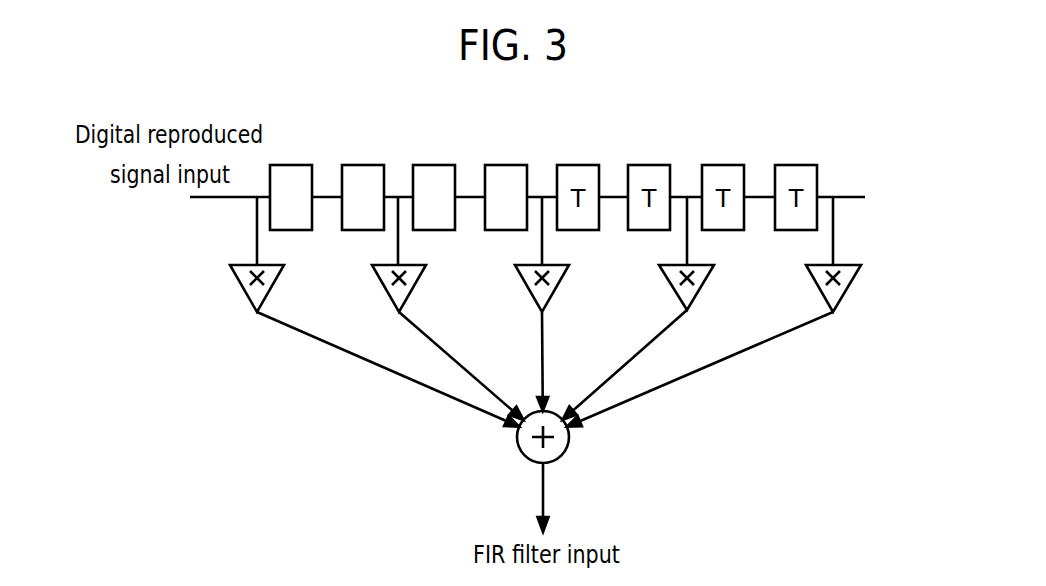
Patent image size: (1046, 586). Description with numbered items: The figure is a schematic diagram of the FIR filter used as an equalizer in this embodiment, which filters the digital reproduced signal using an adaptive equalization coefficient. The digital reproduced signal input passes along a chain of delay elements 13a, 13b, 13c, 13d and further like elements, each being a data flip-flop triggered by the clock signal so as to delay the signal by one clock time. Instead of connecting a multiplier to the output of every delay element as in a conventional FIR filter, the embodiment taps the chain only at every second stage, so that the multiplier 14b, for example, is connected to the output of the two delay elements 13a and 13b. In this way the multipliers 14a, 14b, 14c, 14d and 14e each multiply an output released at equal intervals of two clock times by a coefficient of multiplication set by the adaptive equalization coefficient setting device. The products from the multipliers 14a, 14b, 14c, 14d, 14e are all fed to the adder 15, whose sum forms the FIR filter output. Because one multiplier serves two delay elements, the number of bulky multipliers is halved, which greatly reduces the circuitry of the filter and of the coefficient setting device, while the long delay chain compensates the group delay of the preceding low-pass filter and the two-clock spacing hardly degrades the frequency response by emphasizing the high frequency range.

The delay element 13a is at (297, 165).
The delay element 13b is at (362, 165).
The delay element 13c is at (432, 165).
The delay element 13d is at (504, 165).
The multiplier 14a is at (242, 287).
The multiplier 14b is at (381, 285).
The multiplier 14c is at (525, 285).
The multiplier 14d is at (672, 283).
The multiplier 14e is at (848, 285).
The adder 15 is at (518, 455).